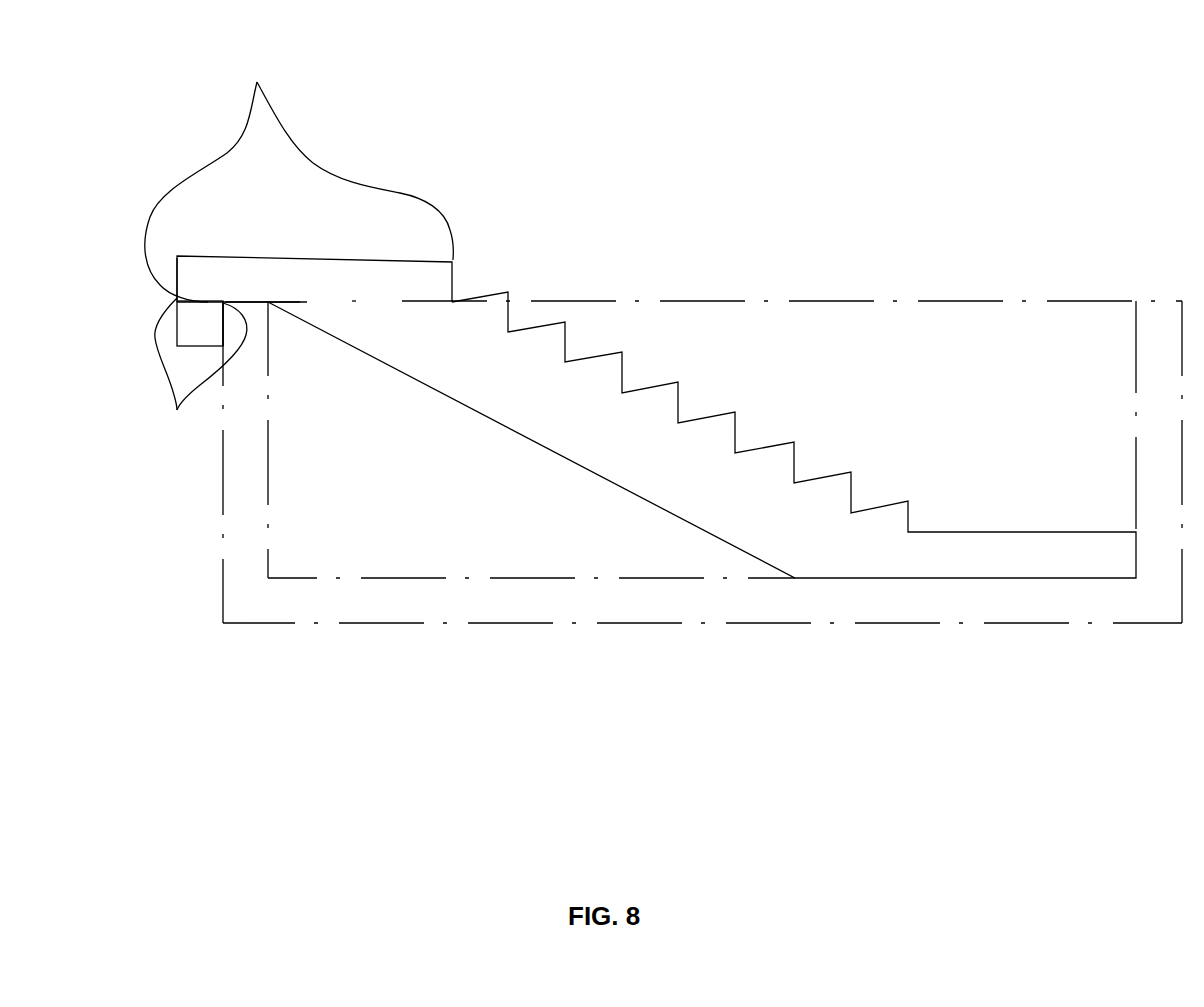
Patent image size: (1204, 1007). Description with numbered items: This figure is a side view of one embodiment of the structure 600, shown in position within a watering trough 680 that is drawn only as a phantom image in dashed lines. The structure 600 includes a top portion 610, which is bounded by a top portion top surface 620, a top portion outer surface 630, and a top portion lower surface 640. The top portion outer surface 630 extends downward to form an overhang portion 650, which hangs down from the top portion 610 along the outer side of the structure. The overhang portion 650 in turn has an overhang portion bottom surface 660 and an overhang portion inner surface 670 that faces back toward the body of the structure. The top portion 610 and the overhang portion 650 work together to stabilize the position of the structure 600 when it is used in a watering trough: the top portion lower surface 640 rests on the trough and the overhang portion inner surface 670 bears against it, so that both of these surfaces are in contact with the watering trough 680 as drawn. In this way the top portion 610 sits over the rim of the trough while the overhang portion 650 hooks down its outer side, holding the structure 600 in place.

The structure 600 is at (535, 367).
The top portion 610 is at (257, 82).
The top portion top surface 620 is at (397, 258).
The top portion outer surface 630 is at (177, 277).
The top portion lower surface 640 is at (248, 298).
The overhang portion 650 is at (177, 410).
The overhang portion bottom surface 660 is at (197, 347).
The overhang portion inner surface 670 is at (223, 340).
The watering trough 680 is at (267, 475).